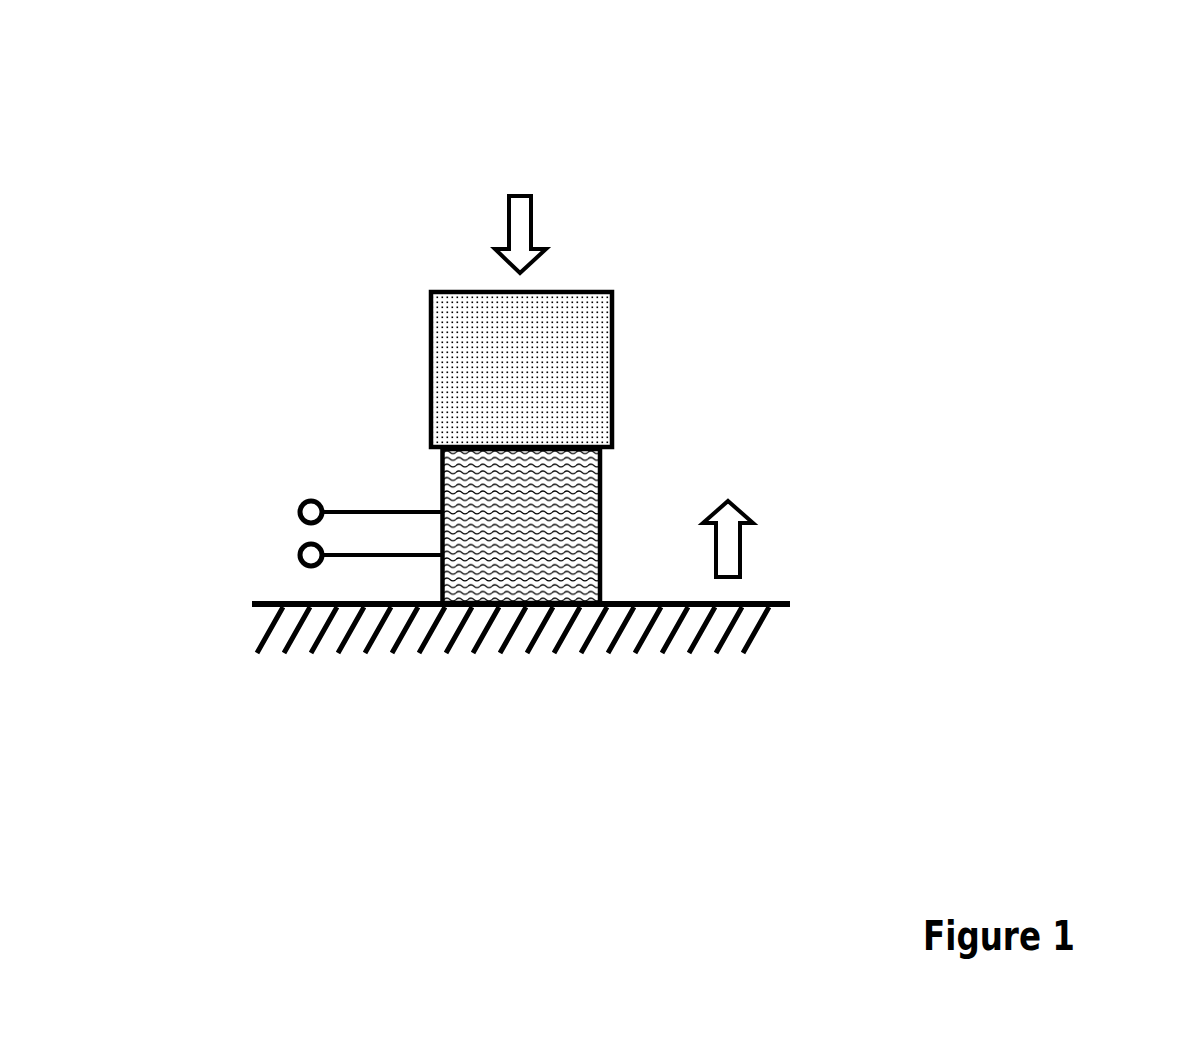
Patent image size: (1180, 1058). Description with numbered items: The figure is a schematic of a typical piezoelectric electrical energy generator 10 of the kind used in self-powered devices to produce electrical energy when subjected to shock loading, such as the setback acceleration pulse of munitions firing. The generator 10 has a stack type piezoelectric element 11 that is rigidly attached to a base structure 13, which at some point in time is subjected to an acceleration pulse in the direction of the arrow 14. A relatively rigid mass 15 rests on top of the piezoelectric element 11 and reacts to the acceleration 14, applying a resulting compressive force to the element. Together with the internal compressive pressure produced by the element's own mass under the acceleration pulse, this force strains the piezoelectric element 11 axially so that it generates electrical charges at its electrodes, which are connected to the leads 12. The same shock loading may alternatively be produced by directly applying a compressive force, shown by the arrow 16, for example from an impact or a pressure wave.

The piezoelectric electrical energy generator 10 is at (973, 148).
The piezoelectric element 11 is at (493, 506).
The leads 12 is at (268, 502).
The base structure 13 is at (353, 657).
The acceleration 14 is at (748, 542).
The rigid mass 15 is at (507, 352).
The compressive force 16 is at (548, 217).